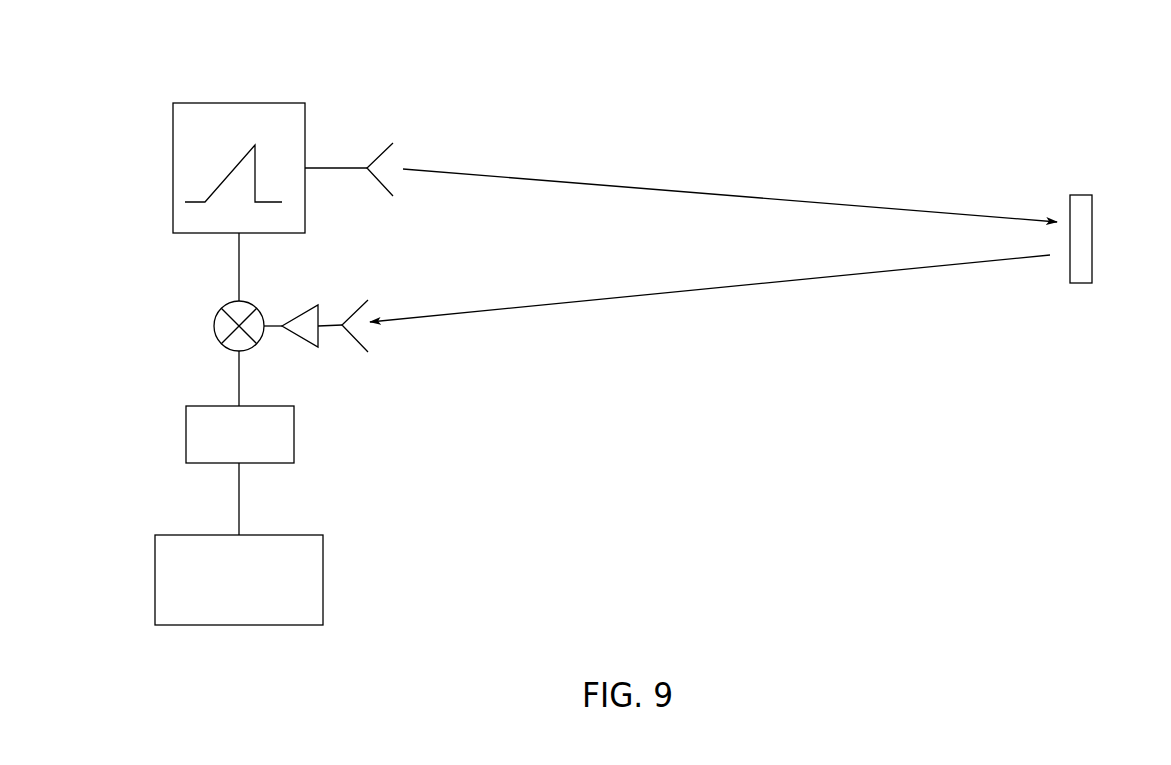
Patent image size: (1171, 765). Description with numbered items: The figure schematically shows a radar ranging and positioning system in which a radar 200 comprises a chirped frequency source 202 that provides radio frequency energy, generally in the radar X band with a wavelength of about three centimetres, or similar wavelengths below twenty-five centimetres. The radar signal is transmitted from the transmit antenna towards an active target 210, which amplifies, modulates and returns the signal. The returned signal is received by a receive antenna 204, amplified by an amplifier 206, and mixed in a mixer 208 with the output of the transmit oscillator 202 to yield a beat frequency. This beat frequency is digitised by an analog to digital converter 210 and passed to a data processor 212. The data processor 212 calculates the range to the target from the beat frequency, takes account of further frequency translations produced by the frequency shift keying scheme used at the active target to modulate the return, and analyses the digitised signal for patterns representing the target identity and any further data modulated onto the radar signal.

The radar 200 is at (158, 88).
The chirped frequency source 202 is at (173, 170).
The receive antenna 204 is at (360, 342).
The amplifier 206 is at (301, 347).
The mixer 208 is at (213, 325).
The active target / analog to digital converter 210 is at (185, 430).
The data processor 212 is at (155, 580).